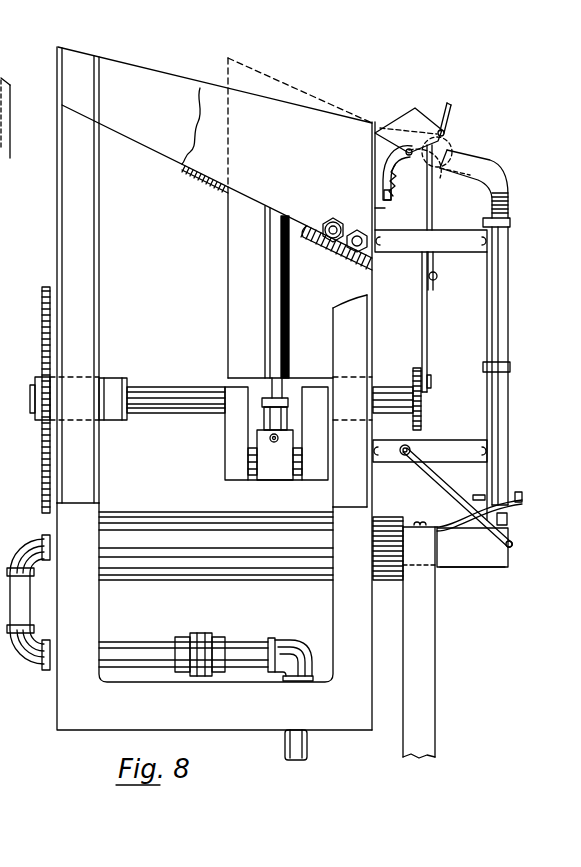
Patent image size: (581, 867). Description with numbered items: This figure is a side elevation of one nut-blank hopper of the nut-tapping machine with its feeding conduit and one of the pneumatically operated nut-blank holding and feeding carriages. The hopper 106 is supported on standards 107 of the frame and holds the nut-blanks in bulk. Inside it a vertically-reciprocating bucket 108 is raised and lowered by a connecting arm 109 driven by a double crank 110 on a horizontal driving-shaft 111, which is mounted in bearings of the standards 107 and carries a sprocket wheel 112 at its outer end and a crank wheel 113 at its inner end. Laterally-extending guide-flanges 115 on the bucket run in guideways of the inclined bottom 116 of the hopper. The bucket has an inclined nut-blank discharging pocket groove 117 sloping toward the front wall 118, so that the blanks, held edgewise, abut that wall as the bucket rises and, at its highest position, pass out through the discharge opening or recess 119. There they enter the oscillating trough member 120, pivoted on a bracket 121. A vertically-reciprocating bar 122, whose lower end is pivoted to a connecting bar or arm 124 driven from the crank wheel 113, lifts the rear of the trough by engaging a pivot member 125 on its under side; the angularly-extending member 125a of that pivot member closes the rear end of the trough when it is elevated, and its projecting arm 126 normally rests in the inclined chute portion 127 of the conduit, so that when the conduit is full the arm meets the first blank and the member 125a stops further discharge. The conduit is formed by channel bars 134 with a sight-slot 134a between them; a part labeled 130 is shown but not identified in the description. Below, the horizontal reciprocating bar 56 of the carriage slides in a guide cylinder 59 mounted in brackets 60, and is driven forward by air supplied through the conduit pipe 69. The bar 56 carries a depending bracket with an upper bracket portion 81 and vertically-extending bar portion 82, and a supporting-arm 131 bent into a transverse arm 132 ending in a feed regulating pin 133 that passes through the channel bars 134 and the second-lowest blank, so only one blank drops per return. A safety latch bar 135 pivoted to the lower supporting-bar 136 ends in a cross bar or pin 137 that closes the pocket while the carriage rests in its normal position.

The hopper 106 is at (165, 61).
The standards 107 is at (93, 218).
The vertically-reciprocating bucket 108 is at (232, 229).
The connecting arm 109 is at (226, 378).
The double crank 110 is at (313, 451).
The horizontal driving-shaft 111 is at (173, 403).
The sprocket wheel 112 is at (44, 331).
The crank wheel 113 is at (416, 406).
The guide-flanges 115 is at (273, 258).
The inclined bottom 116 is at (218, 183).
The inclined nut-blank discharging pocket groove 117 is at (283, 214).
The front wall 118 is at (375, 262).
The discharge opening or recess 119 is at (373, 154).
The oscillating trough member 120 is at (406, 127).
The bracket 121 is at (392, 178).
The vertically-reciprocating bar 122 is at (433, 204).
The connecting bar or arm 124 is at (428, 328).
The pivot member 125 is at (447, 155).
The angularly-extending member 125a is at (443, 131).
The projecting arm 126 is at (450, 104).
The inclined chute portion 127 is at (476, 164).
The tube 130 is at (518, 376).
The supporting-arm 131 is at (456, 517).
The transversely disposed arm 132 is at (523, 498).
The feed regulating pin 133 is at (478, 497).
The channel bars 134 is at (514, 254).
The sight-slot or opening 134a is at (497, 315).
The safety latch bar 135 is at (432, 482).
The lower supporting-bar 136 is at (456, 436).
The cross bar or pin 137 is at (514, 545).
The horizontal reciprocating bar 56 is at (463, 563).
The guide cylinder 59 is at (189, 533).
The brackets 60 is at (84, 603).
The air or fluid conduit pipes 69 is at (140, 650).
The upper bracket portion 81 is at (428, 545).
The vertically-extending bar portion 82 is at (430, 719).